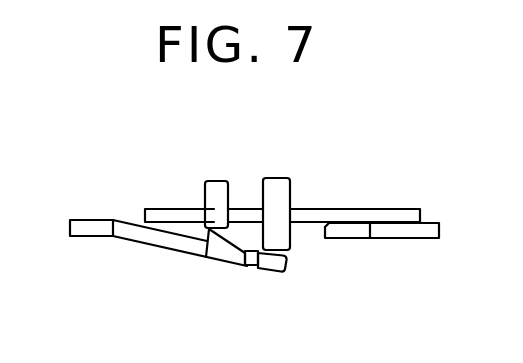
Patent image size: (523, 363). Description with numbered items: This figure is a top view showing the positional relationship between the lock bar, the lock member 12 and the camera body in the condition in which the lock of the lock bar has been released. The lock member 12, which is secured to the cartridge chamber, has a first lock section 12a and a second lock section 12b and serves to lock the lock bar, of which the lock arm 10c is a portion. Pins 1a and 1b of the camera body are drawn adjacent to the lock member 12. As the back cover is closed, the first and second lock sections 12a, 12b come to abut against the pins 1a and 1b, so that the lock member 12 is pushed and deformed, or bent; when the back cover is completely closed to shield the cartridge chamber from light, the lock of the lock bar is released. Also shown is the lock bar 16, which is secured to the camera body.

The pin 1a is at (218, 182).
The pin 1b is at (279, 178).
The lock arm 10c is at (404, 214).
The lock member 12 is at (94, 220).
The first lock section 12a is at (193, 292).
The second lock section 12b is at (243, 308).
The lock bar 16 is at (417, 254).